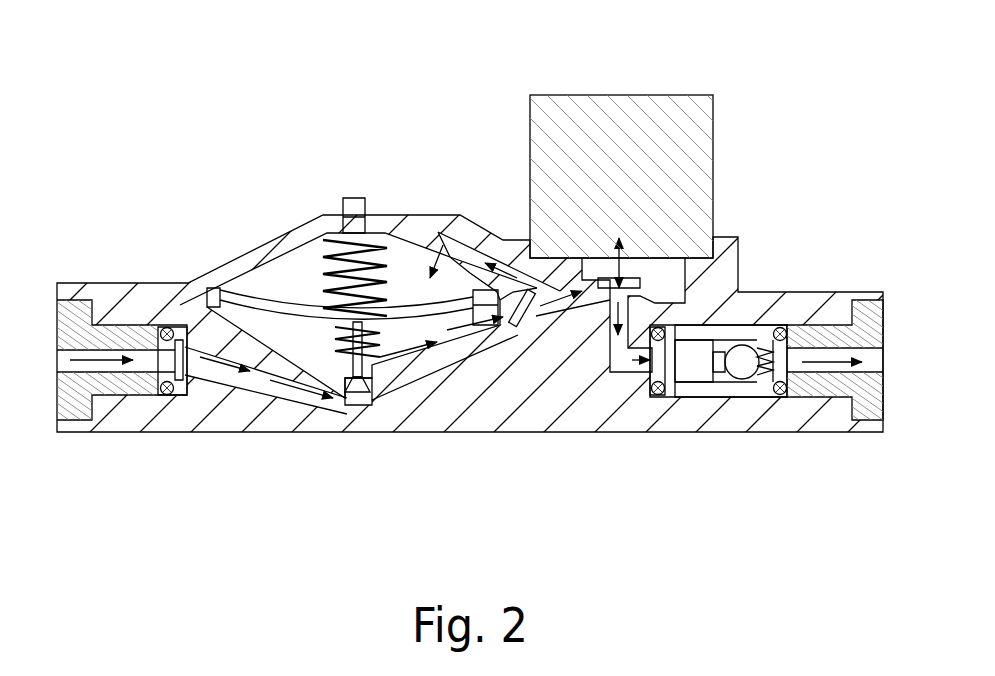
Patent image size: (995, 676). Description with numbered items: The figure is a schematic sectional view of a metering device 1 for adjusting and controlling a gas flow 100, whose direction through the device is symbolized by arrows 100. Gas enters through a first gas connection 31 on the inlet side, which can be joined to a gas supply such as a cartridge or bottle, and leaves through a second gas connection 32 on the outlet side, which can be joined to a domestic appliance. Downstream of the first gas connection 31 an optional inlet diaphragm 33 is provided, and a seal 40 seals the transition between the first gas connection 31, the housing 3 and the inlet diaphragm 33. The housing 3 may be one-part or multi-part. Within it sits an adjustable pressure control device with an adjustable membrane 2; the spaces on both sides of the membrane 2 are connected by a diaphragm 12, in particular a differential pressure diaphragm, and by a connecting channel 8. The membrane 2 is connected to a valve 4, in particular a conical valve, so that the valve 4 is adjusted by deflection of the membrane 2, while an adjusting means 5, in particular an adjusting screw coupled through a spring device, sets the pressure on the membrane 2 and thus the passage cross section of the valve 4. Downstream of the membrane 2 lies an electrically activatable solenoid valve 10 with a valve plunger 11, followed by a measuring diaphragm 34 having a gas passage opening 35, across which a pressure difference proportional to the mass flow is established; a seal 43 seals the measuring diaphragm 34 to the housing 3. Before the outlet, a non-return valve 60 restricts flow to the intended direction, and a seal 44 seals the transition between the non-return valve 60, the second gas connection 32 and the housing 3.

The metering device 1 is at (133, 138).
The adjustable membrane 2 is at (275, 302).
The housing 3 is at (248, 402).
The valve 4 is at (357, 405).
The adjusting means 5 is at (357, 205).
The connecting channel 8 is at (510, 262).
The solenoid valve 10 is at (625, 125).
The valve plunger 11 is at (546, 365).
The diaphragm 12 is at (507, 306).
The first gas connection 31 is at (72, 325).
The second gas connection 32 is at (868, 318).
The inlet diaphragm 33 is at (180, 395).
The measuring diaphragm 34 is at (683, 363).
The gas passage opening 35 is at (716, 390).
The seal 40 is at (165, 395).
The seal 43 is at (652, 395).
The seal 44 is at (787, 383).
The non-return valve 60 is at (767, 392).
The gas flow 100 is at (212, 355).